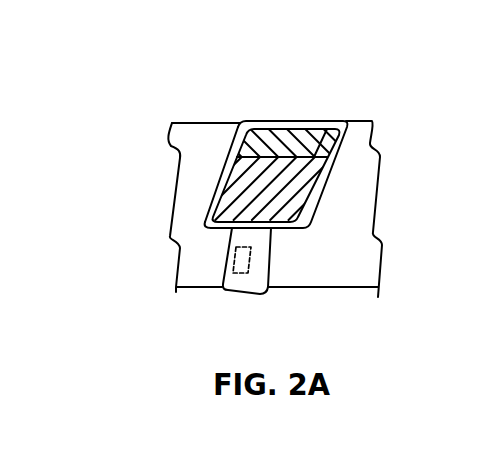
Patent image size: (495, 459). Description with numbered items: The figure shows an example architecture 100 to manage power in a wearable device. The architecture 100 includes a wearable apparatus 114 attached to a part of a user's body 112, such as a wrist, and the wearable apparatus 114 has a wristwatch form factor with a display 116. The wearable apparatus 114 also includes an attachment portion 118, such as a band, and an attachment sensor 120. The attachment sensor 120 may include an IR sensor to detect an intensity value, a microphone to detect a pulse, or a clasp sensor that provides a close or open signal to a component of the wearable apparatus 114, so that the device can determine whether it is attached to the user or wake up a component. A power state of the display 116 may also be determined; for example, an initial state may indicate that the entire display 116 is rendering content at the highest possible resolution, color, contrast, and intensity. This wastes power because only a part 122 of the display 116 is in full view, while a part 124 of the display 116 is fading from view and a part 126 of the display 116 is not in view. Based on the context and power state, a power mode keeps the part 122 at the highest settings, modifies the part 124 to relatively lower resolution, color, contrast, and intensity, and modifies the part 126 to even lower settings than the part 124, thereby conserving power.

The architecture 100 is at (40, 72).
The part of a user's body 112 is at (207, 123).
The wearable apparatus 114 is at (215, 161).
The display 116 is at (212, 198).
The attachment portion 118 is at (221, 271).
The attachment sensor 120 is at (249, 267).
The part of the display in full view 122 is at (301, 193).
The part of the display fading from view 124 is at (270, 120).
The part of the display not in view 126 is at (371, 119).